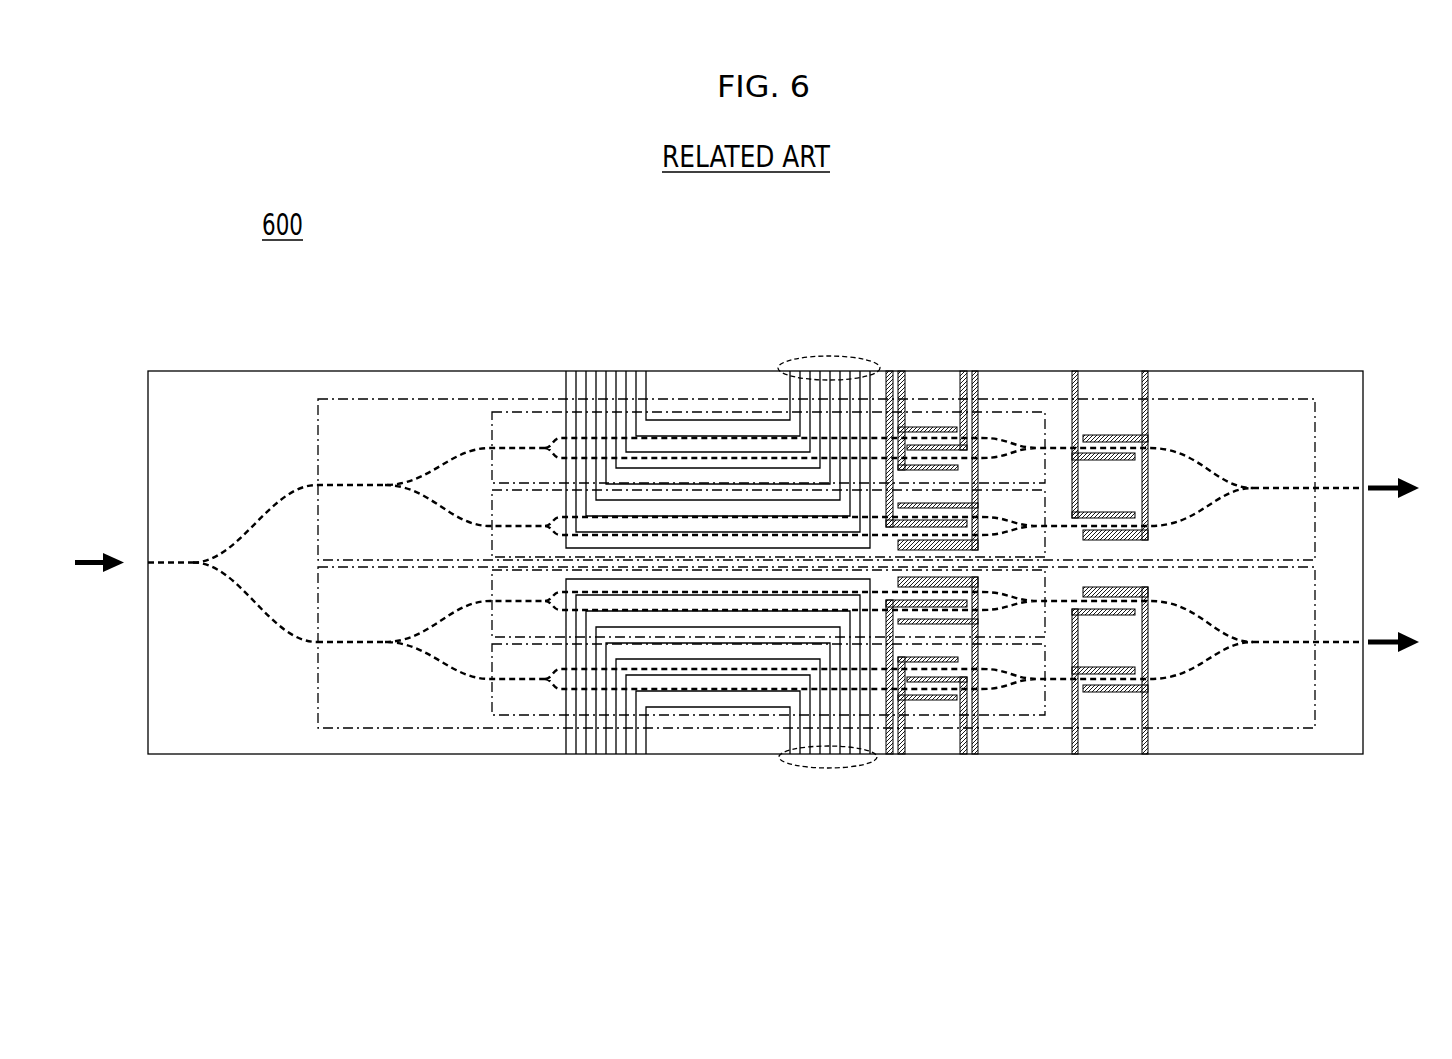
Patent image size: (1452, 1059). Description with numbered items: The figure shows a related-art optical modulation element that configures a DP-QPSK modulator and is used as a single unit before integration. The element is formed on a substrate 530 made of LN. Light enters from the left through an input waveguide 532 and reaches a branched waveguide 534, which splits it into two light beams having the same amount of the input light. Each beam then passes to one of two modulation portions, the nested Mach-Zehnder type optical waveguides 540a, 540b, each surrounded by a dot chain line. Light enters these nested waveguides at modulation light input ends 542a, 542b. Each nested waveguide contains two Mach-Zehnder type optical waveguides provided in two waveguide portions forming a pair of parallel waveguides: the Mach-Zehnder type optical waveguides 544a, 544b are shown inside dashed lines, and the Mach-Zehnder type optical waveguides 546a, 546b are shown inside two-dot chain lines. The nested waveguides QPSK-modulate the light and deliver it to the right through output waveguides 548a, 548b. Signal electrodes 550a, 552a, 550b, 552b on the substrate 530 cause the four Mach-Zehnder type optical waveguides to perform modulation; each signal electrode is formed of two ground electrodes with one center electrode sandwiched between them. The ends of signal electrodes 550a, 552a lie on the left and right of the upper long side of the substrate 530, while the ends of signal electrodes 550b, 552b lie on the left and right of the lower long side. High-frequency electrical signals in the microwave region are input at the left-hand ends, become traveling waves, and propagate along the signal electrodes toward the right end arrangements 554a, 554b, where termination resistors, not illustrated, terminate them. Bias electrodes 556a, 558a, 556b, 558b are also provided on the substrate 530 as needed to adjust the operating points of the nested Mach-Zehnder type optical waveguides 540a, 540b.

The substrate 530 is at (180, 371).
The input waveguide 532 is at (148, 577).
The branched waveguide 534 is at (193, 558).
The nested Mach-Zehnder type optical waveguide 540a is at (345, 398).
The nested Mach-Zehnder type optical waveguide 540b is at (345, 728).
The modulation light input end 542a is at (317, 485).
The modulation light input end 542b is at (317, 642).
The Mach-Zehnder type optical waveguide 544a is at (545, 418).
The Mach-Zehnder type optical waveguide 544b is at (517, 703).
The Mach-Zehnder type optical waveguide 546a is at (517, 480).
The Mach-Zehnder type optical waveguide 546b is at (500, 627).
The output waveguide 548a is at (1343, 488).
The output waveguide 548b is at (1343, 642).
The signal electrode 550a is at (650, 353).
The signal electrode 550b is at (650, 758).
The signal electrode 552a is at (602, 353).
The signal electrode 552b is at (605, 758).
The right end arrangement 554a is at (820, 358).
The right end arrangement 554b is at (833, 770).
The bias electrode 556a is at (983, 357).
The bias electrode 556b is at (983, 758).
The bias electrode 558a is at (1155, 357).
The bias electrode 558b is at (1157, 758).